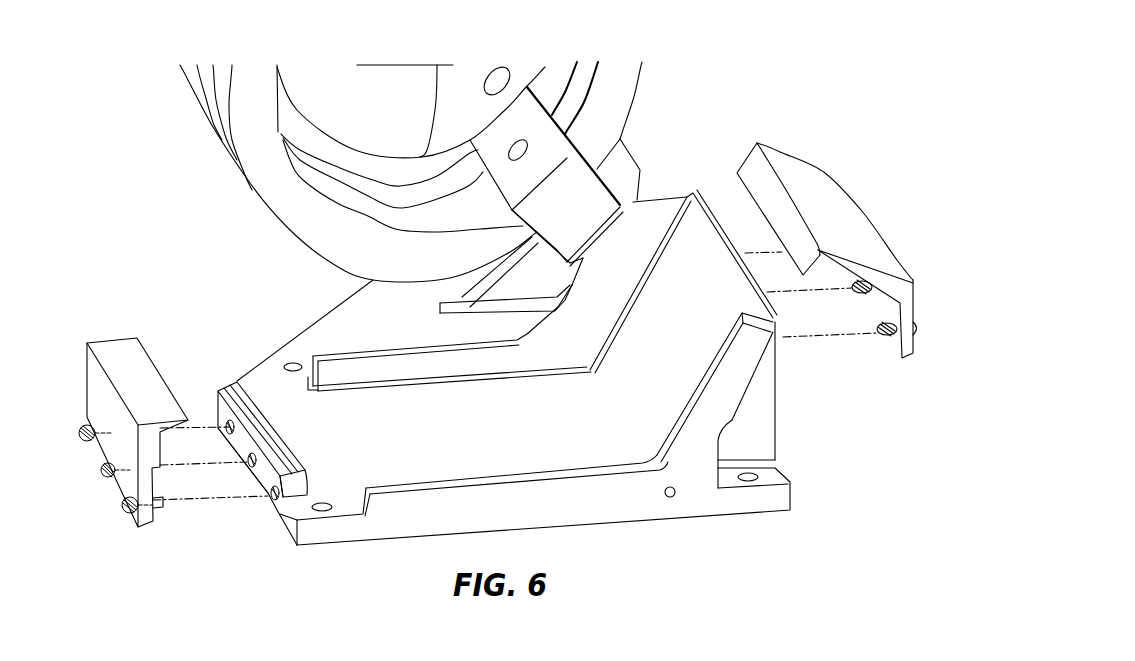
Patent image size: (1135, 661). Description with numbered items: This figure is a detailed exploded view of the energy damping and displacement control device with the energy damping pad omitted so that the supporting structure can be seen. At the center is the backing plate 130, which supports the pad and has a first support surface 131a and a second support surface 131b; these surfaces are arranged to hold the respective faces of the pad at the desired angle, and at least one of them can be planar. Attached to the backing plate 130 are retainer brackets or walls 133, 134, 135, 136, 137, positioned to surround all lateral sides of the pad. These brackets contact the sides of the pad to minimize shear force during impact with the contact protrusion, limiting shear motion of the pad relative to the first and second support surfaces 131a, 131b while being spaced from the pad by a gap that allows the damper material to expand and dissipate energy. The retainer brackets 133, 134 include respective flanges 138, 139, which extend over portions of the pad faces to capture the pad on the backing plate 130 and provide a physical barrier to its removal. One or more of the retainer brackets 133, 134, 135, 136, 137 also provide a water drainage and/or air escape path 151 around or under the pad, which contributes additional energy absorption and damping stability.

The backing plate 130 is at (345, 528).
The first support surface 131a is at (477, 436).
The second support surface 131b is at (702, 326).
The retainer bracket 133 is at (103, 438).
The retainer bracket 134 is at (827, 260).
The retainer bracket 135 is at (580, 477).
The retainer bracket 136 is at (383, 352).
The retainer bracket 137 is at (240, 390).
The flange 138 is at (180, 432).
The flange 139 is at (812, 270).
The water drainage and/or air escape path 151 is at (674, 502).